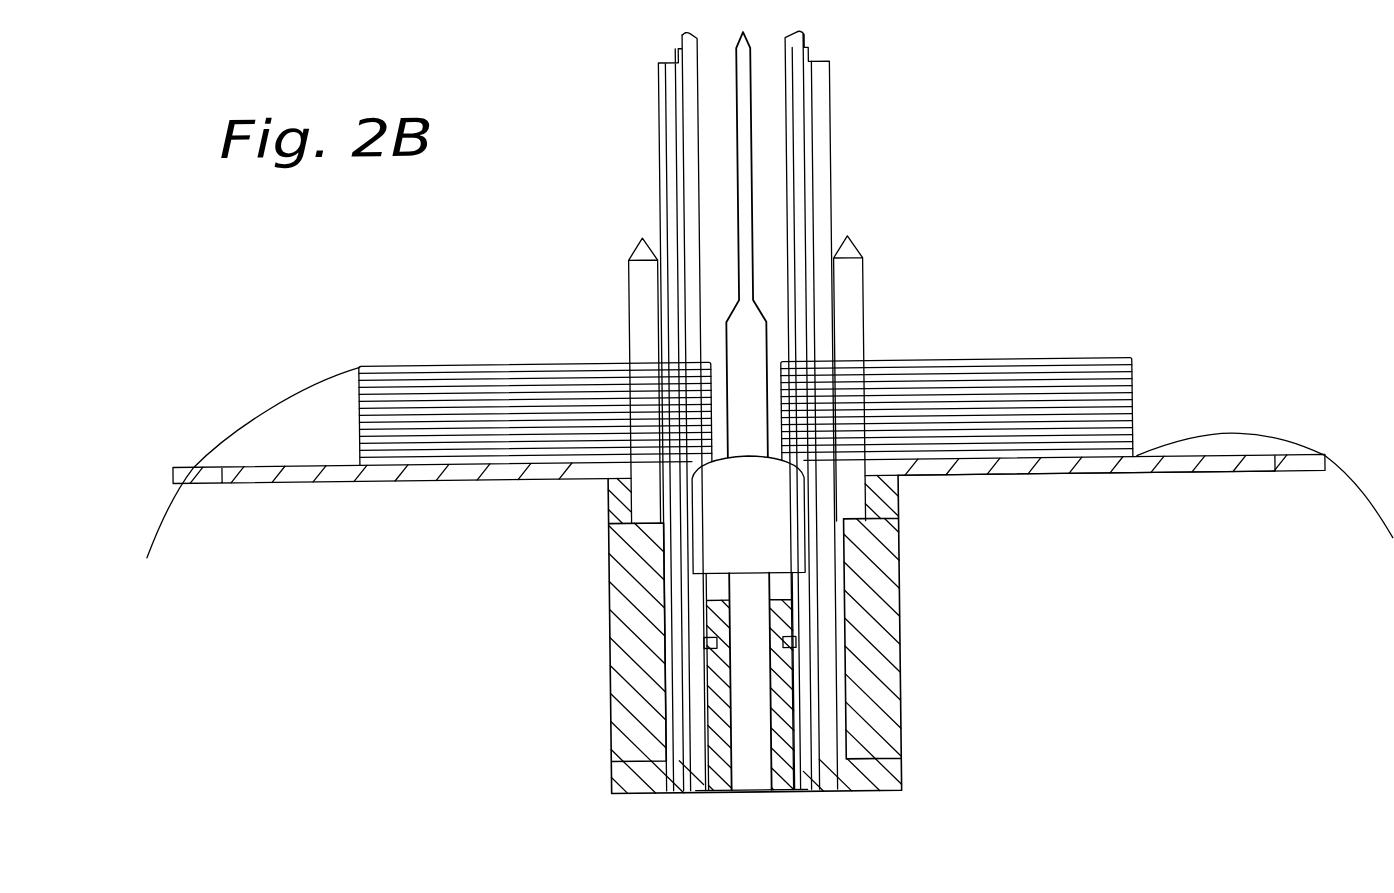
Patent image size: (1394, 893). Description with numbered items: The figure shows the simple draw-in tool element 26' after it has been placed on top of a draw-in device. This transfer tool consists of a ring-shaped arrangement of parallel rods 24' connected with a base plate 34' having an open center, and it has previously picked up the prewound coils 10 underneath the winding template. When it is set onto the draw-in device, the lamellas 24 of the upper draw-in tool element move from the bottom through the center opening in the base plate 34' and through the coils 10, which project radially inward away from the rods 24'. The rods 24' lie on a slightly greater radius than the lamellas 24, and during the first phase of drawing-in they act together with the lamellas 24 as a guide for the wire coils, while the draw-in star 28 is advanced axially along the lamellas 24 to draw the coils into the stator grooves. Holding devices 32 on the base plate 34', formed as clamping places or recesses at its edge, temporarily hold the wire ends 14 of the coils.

The coil 10 is at (1049, 378).
The wire ends 14 is at (264, 402).
The lamellas 24 is at (789, 410).
The rods 24' is at (800, 367).
The draw-in tool element 26' is at (699, 635).
The draw-in star 28 is at (774, 548).
The holding devices 32 is at (213, 474).
The base plate 34' is at (1087, 505).